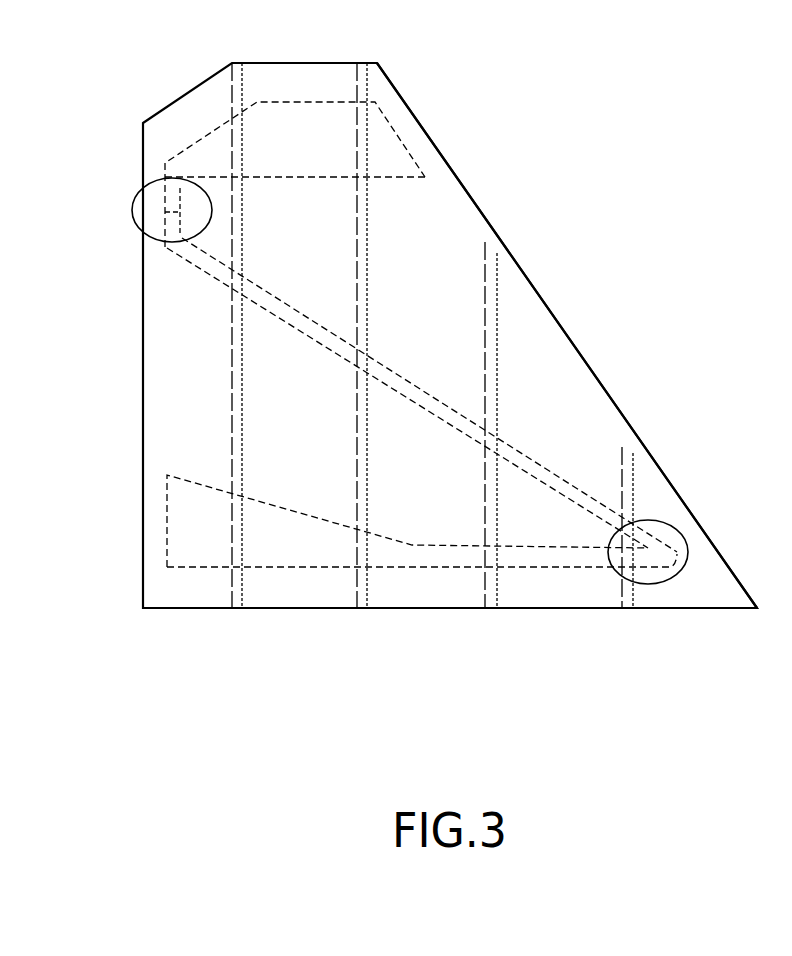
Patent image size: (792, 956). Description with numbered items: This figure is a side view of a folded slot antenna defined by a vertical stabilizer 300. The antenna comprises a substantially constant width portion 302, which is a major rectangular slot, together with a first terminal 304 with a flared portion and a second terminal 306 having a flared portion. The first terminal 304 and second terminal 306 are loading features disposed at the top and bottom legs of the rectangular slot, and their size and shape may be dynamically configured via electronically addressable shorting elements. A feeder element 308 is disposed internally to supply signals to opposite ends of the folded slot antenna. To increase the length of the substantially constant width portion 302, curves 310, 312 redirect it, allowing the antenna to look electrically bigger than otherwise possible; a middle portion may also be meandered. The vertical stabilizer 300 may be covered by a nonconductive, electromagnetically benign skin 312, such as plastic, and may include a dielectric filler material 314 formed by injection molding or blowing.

The vertical stabilizer 300 is at (630, 118).
The substantially constant width portion 302 is at (270, 305).
The first terminal 304 is at (311, 147).
The second terminal 306 is at (180, 548).
The feeder element 308 is at (131, 212).
The curve 310 is at (682, 535).
The curve 312 is at (560, 347).
The dielectric filler material 314 is at (322, 153).